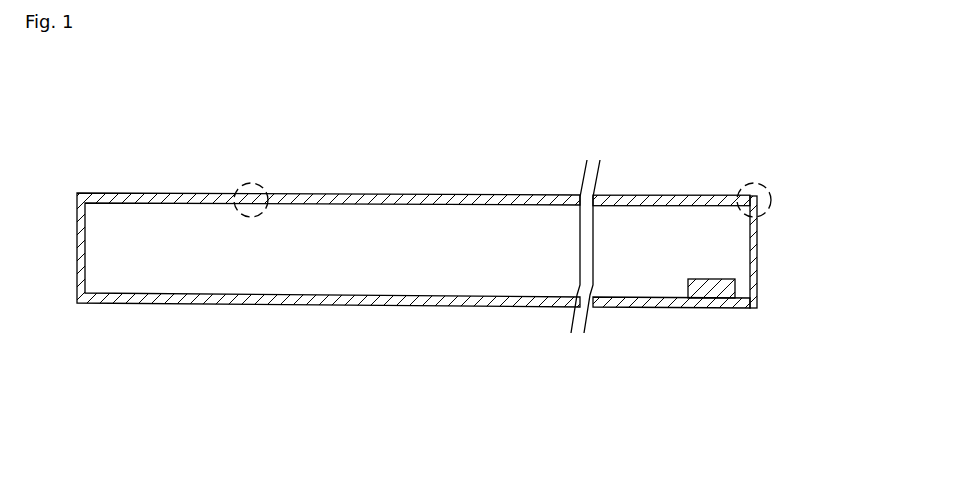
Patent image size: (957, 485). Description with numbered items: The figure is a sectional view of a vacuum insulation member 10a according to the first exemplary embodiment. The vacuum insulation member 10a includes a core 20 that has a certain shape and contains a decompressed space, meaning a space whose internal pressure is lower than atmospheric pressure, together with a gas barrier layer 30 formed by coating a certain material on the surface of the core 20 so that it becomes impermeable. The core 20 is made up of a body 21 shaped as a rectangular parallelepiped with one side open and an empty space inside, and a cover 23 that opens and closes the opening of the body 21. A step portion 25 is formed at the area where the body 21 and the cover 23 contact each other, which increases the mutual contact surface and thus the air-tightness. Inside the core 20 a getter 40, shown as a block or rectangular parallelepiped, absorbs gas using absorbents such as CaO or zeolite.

The vacuum insulation member 10a is at (150, 157).
The gas barrier layer 30 is at (423, 204).
The step portion 25 is at (751, 193).
The core 20 is at (705, 427).
The body 21 is at (720, 308).
The cover 23 is at (757, 267).
The getter 40 is at (693, 293).